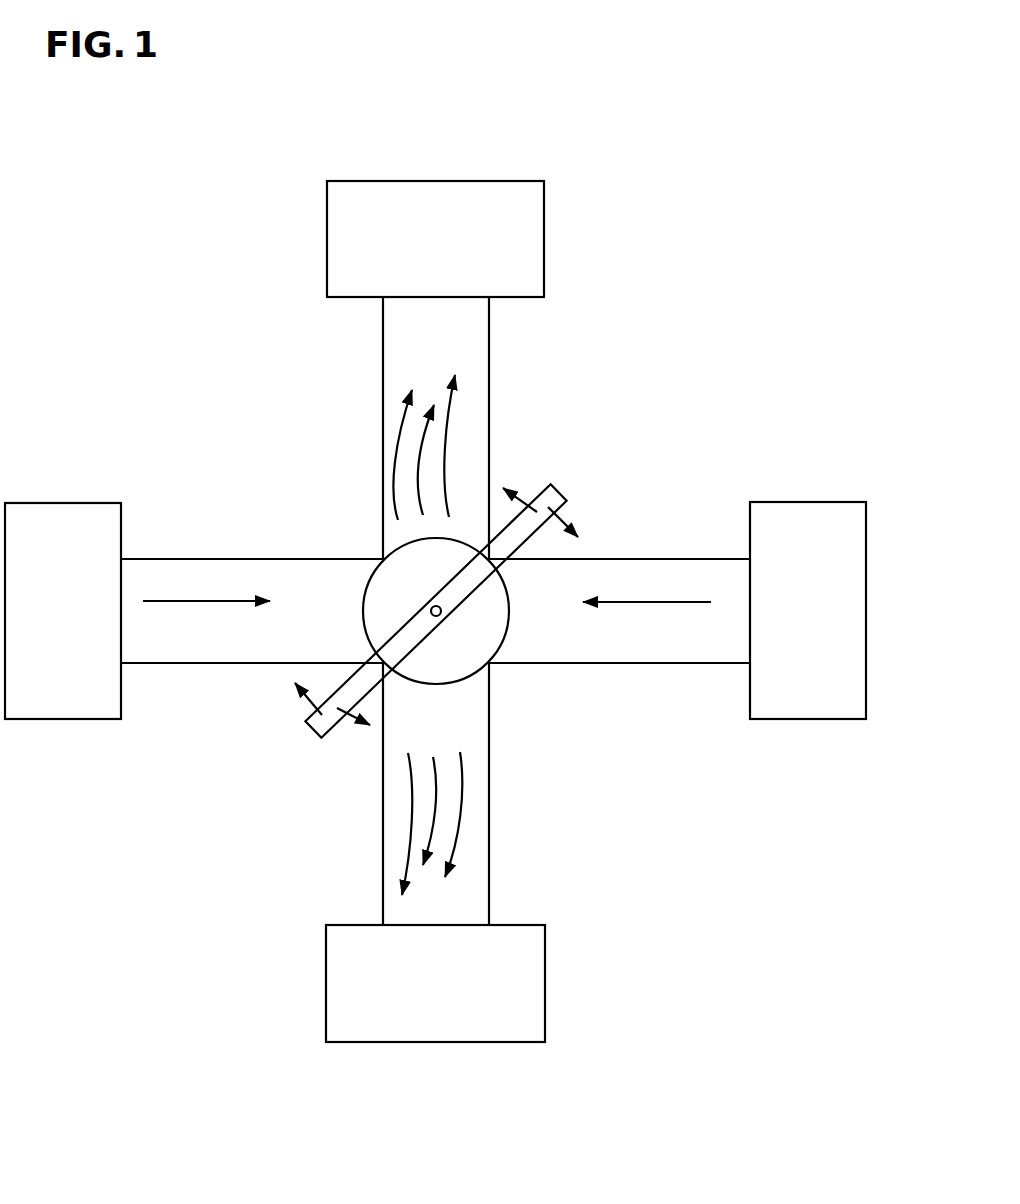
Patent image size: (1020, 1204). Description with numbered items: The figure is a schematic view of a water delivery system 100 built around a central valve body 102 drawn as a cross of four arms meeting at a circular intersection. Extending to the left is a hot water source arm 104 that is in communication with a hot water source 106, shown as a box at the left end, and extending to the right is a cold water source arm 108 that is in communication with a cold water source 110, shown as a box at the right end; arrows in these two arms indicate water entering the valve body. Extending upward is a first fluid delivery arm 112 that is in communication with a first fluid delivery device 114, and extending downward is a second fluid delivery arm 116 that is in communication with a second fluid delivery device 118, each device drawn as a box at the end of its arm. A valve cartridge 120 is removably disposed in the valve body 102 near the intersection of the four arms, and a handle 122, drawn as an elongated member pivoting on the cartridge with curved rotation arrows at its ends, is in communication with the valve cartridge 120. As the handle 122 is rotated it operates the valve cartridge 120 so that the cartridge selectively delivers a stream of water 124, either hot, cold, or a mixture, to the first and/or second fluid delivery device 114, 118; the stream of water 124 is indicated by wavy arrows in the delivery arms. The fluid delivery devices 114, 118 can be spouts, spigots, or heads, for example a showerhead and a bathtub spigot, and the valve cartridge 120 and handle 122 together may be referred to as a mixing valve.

The water delivery system 100 is at (643, 154).
The valve body 102 is at (640, 435).
The hot water source arm 104 is at (310, 558).
The hot water source 106 is at (90, 628).
The cold water source arm 108 is at (628, 558).
The cold water source 110 is at (834, 620).
The first fluid delivery arm 112 is at (488, 409).
The first fluid delivery device 114 is at (460, 248).
The second fluid delivery arm 116 is at (488, 793).
The second fluid delivery device 118 is at (460, 1002).
The valve cartridge 120 is at (385, 595).
The handle 122 is at (512, 532).
The stream of water 124 is at (405, 433).